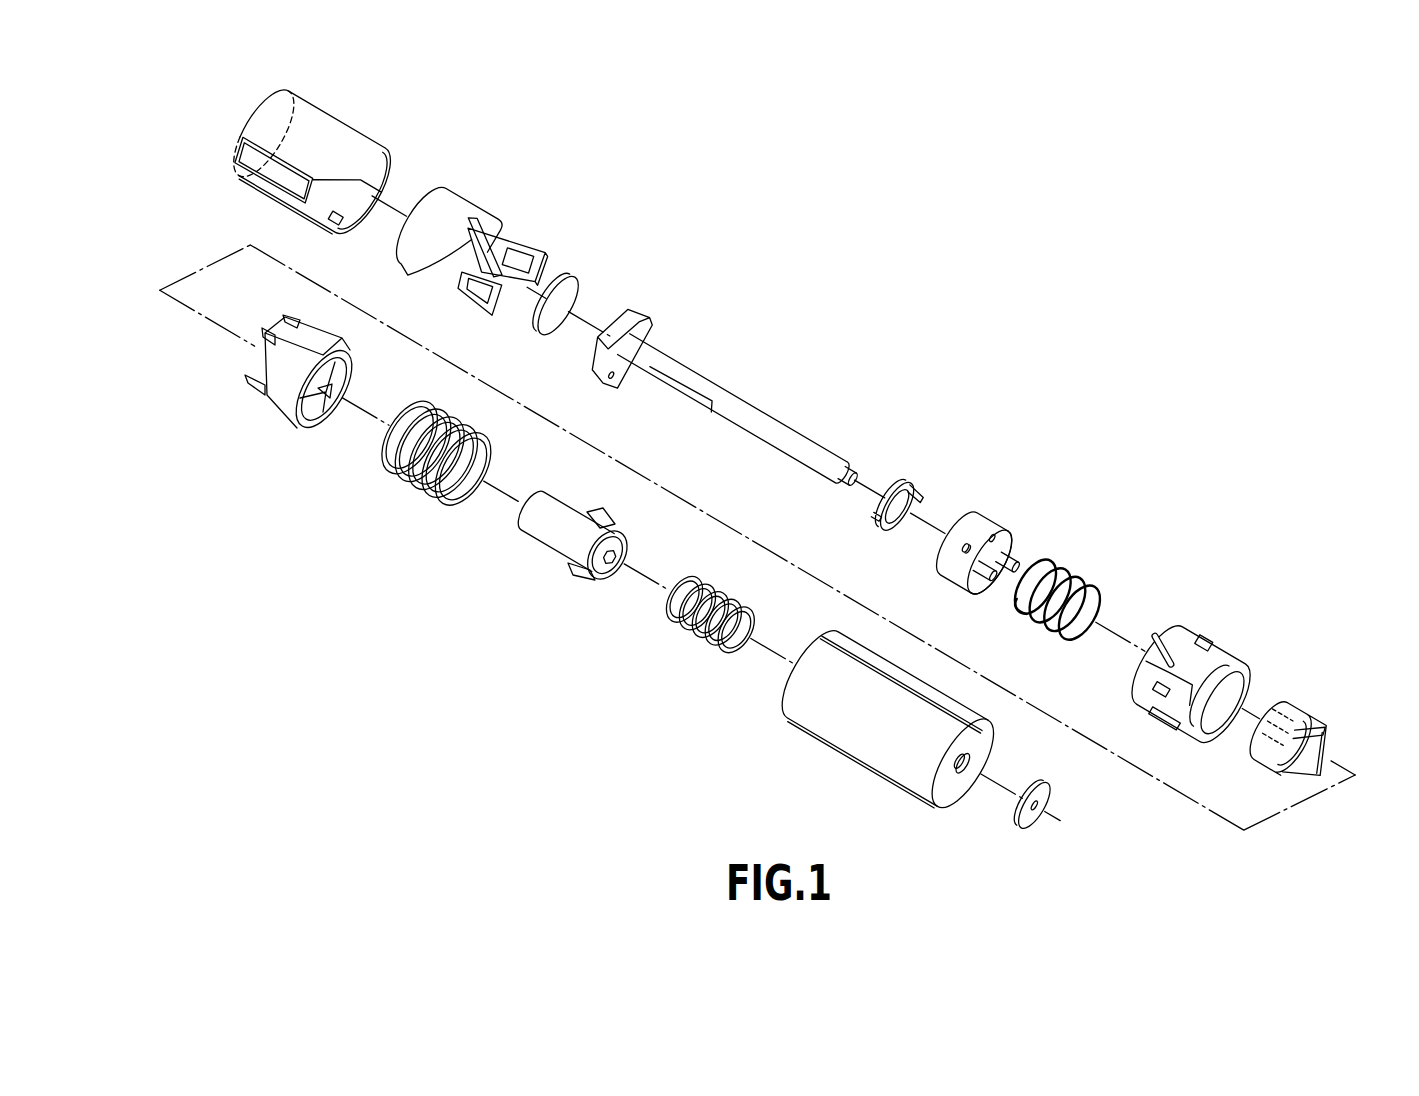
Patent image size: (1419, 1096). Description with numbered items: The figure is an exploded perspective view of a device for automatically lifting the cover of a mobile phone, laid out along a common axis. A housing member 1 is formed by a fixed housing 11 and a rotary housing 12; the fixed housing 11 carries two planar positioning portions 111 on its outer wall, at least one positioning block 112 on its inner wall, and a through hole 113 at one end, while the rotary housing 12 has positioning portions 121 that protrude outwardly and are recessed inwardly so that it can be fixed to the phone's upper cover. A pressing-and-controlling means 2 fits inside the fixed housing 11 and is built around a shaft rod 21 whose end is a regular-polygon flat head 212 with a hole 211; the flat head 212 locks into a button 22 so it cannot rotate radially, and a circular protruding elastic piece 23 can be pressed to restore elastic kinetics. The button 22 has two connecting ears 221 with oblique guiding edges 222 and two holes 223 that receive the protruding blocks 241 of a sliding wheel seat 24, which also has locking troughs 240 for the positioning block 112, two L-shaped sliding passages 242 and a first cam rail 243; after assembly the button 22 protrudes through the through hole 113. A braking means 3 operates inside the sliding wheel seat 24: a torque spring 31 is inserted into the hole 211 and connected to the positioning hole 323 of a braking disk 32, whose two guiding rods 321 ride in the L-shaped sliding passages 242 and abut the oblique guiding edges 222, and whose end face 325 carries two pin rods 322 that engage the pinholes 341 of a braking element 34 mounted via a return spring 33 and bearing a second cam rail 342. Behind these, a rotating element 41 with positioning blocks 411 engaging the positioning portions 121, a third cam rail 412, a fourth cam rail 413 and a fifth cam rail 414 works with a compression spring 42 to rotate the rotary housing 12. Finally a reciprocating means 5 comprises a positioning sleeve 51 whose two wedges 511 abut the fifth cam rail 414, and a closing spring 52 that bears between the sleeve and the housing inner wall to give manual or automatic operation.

The housing member 1 is at (243, 103).
The fixed housing 11 is at (340, 127).
The planar positioning portions 111 is at (265, 177).
The positioning block 112 is at (328, 224).
The through hole 113 is at (246, 118).
The rotary housing 12 is at (860, 743).
The positioning portions 121 is at (848, 650).
The pressing-and-controlling means 2 is at (582, 235).
The shaft rod 21 is at (766, 418).
The hole 211 is at (620, 368).
The flat head 212 is at (630, 310).
The button 22 is at (450, 195).
The connecting ears 221 is at (523, 237).
The oblique guiding edges 222 is at (470, 237).
The holes 223 is at (483, 297).
The elastic piece 23 is at (553, 307).
The sliding wheel seat 24 is at (1228, 660).
The locking troughs 240 is at (1210, 645).
The protruding blocks 241 is at (1155, 688).
The L-shaped sliding passages 242 is at (1180, 635).
The first cam rail 243 is at (1185, 718).
The braking means 3 is at (1110, 487).
The torque spring 31 is at (892, 483).
The braking disk 32 is at (962, 512).
The guiding rods 321 is at (968, 555).
The pin rods 322 is at (975, 580).
The positioning hole 323 is at (1000, 537).
The end face 325 is at (985, 520).
The return spring 33 is at (1047, 615).
The braking element 34 is at (1305, 710).
The pinholes 341 is at (1255, 740).
The second cam rail 342 is at (1322, 737).
The rotating element 41 is at (285, 402).
The positioning blocks 411 is at (305, 320).
The third cam rail 412 is at (275, 325).
The fourth cam rail 413 is at (268, 372).
The fifth cam rail 414 is at (320, 410).
The compression spring 42 is at (410, 480).
The reciprocating means 5 is at (630, 603).
The positioning sleeve 51 is at (540, 532).
The wedges 511 is at (618, 517).
The closing spring 52 is at (690, 640).